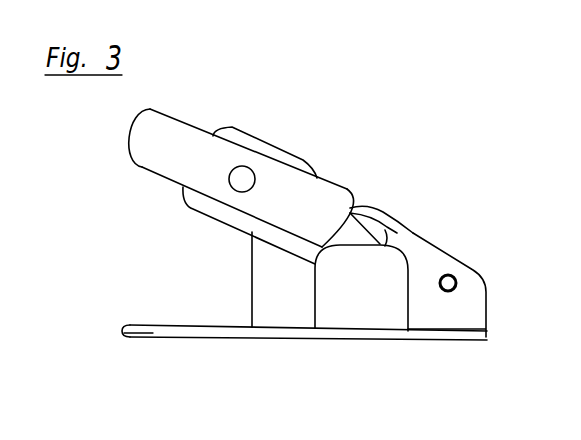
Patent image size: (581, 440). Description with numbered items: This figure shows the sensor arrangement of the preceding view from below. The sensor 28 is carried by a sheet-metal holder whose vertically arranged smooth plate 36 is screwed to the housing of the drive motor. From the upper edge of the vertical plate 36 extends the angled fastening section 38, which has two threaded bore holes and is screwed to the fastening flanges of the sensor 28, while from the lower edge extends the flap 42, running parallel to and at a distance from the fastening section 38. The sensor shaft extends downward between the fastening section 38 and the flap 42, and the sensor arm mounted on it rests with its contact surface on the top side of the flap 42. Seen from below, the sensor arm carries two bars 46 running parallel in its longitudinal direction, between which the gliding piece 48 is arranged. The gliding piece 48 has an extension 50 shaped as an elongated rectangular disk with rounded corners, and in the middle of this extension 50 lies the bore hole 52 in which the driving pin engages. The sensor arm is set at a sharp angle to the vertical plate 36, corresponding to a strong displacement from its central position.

The sensor 28 is at (387, 213).
The vertical plate 36 is at (232, 328).
The fastening section 38 is at (470, 303).
The flap 42 is at (375, 298).
The bars 46 is at (257, 143).
The gliding piece 48 is at (323, 200).
The extension 50 is at (150, 153).
The bore hole 52 is at (240, 177).